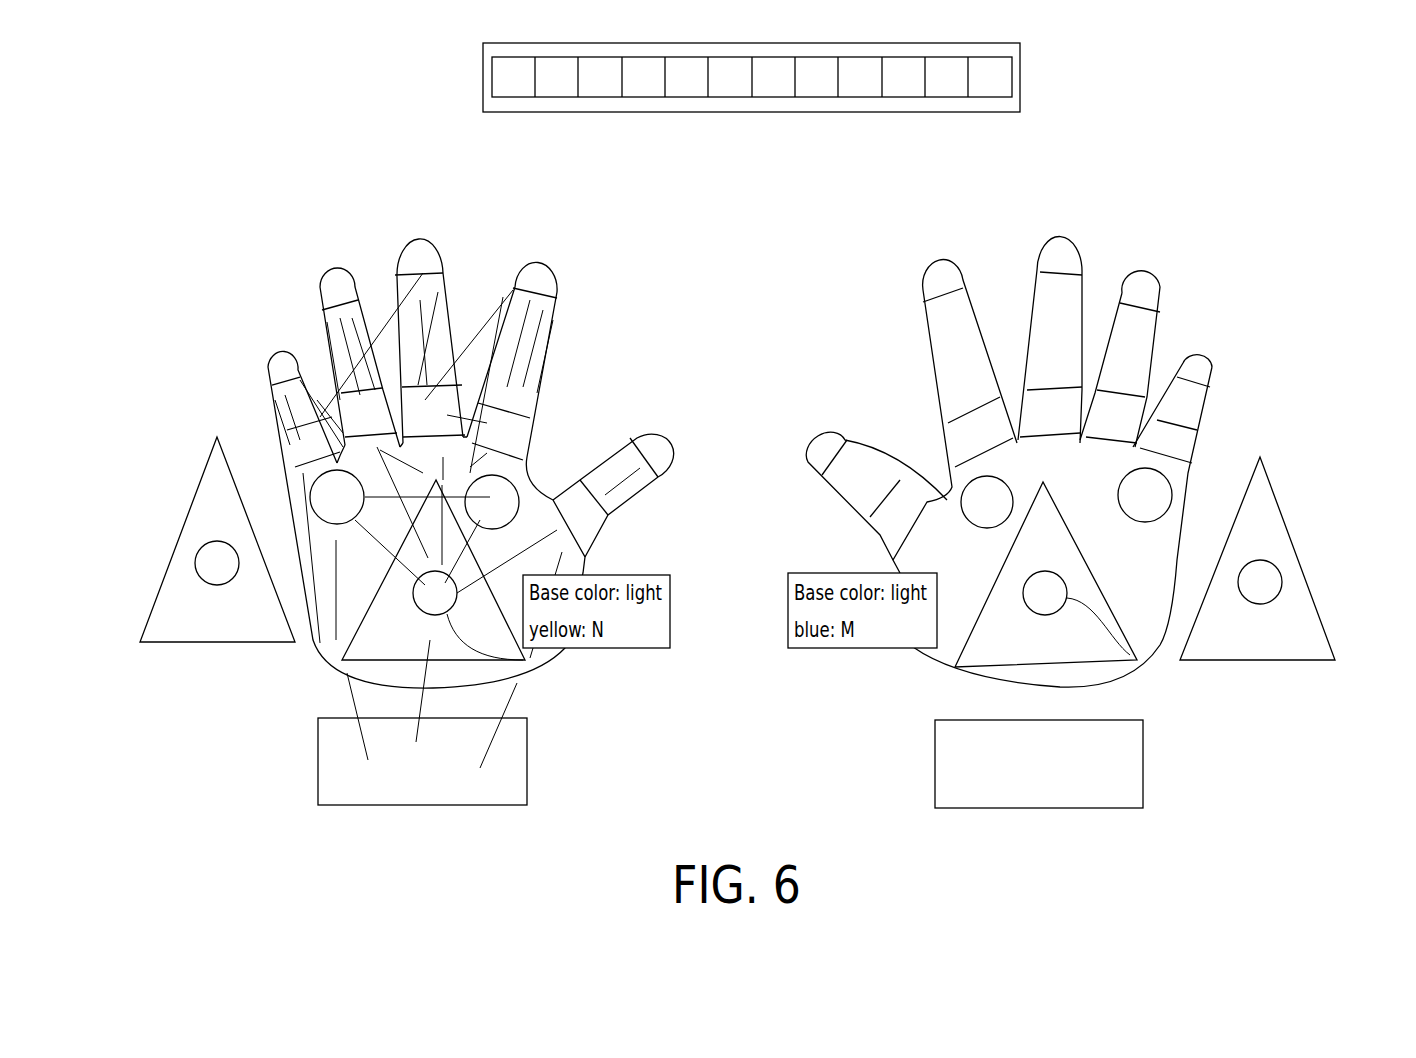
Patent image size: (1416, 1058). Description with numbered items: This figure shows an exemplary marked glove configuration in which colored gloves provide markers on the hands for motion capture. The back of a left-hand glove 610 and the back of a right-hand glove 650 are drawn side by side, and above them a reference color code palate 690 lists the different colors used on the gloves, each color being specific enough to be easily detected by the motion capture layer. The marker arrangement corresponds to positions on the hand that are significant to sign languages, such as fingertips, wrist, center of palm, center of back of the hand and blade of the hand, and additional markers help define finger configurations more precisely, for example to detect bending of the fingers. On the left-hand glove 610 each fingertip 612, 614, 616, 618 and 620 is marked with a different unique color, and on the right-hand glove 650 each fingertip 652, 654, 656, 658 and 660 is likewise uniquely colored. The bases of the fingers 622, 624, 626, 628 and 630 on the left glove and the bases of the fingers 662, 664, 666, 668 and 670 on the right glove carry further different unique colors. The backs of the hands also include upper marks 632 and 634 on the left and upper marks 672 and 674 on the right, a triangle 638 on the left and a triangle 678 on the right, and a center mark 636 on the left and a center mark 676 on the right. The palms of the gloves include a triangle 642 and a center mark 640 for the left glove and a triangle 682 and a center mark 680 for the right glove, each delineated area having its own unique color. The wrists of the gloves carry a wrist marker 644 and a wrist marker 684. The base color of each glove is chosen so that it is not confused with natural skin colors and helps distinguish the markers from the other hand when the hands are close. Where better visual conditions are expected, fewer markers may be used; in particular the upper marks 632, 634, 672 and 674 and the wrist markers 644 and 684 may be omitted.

The left-hand glove 610 is at (238, 257).
The fingertip 612 is at (268, 362).
The fingertip 614 is at (333, 268).
The fingertip 616 is at (425, 240).
The fingertip 618 is at (560, 275).
The fingertip 620 is at (660, 435).
The base of the finger 622 is at (300, 448).
The base of the finger 624 is at (348, 412).
The base of the finger 626 is at (445, 412).
The base of the finger 628 is at (540, 405).
The base of the finger 630 is at (607, 527).
The upper mark 632 is at (305, 492).
The upper mark 634 is at (520, 490).
The center mark 636 is at (520, 660).
The triangle 638 is at (493, 683).
The center mark 640 is at (195, 562).
The triangle 642 is at (155, 612).
The wrist marker 644 is at (465, 805).
The right-hand glove 650 is at (1268, 255).
The fingertip 652 is at (1212, 352).
The fingertip 654 is at (1147, 270).
The fingertip 656 is at (1062, 238).
The fingertip 658 is at (940, 258).
The fingertip 660 is at (822, 433).
The base of the finger 662 is at (1205, 440).
The base of the finger 664 is at (1150, 405).
The base of the finger 666 is at (1090, 323).
The base of the finger 668 is at (947, 440).
The base of the finger 670 is at (880, 537).
The upper mark 672 is at (1172, 488).
The upper mark 674 is at (948, 493).
The center mark 676 is at (1093, 663).
The triangle 678 is at (1093, 663).
The center mark 680 is at (1280, 570).
The triangle 682 is at (1325, 613).
The wrist marker 684 is at (1105, 808).
The reference color code palate 690 is at (483, 80).